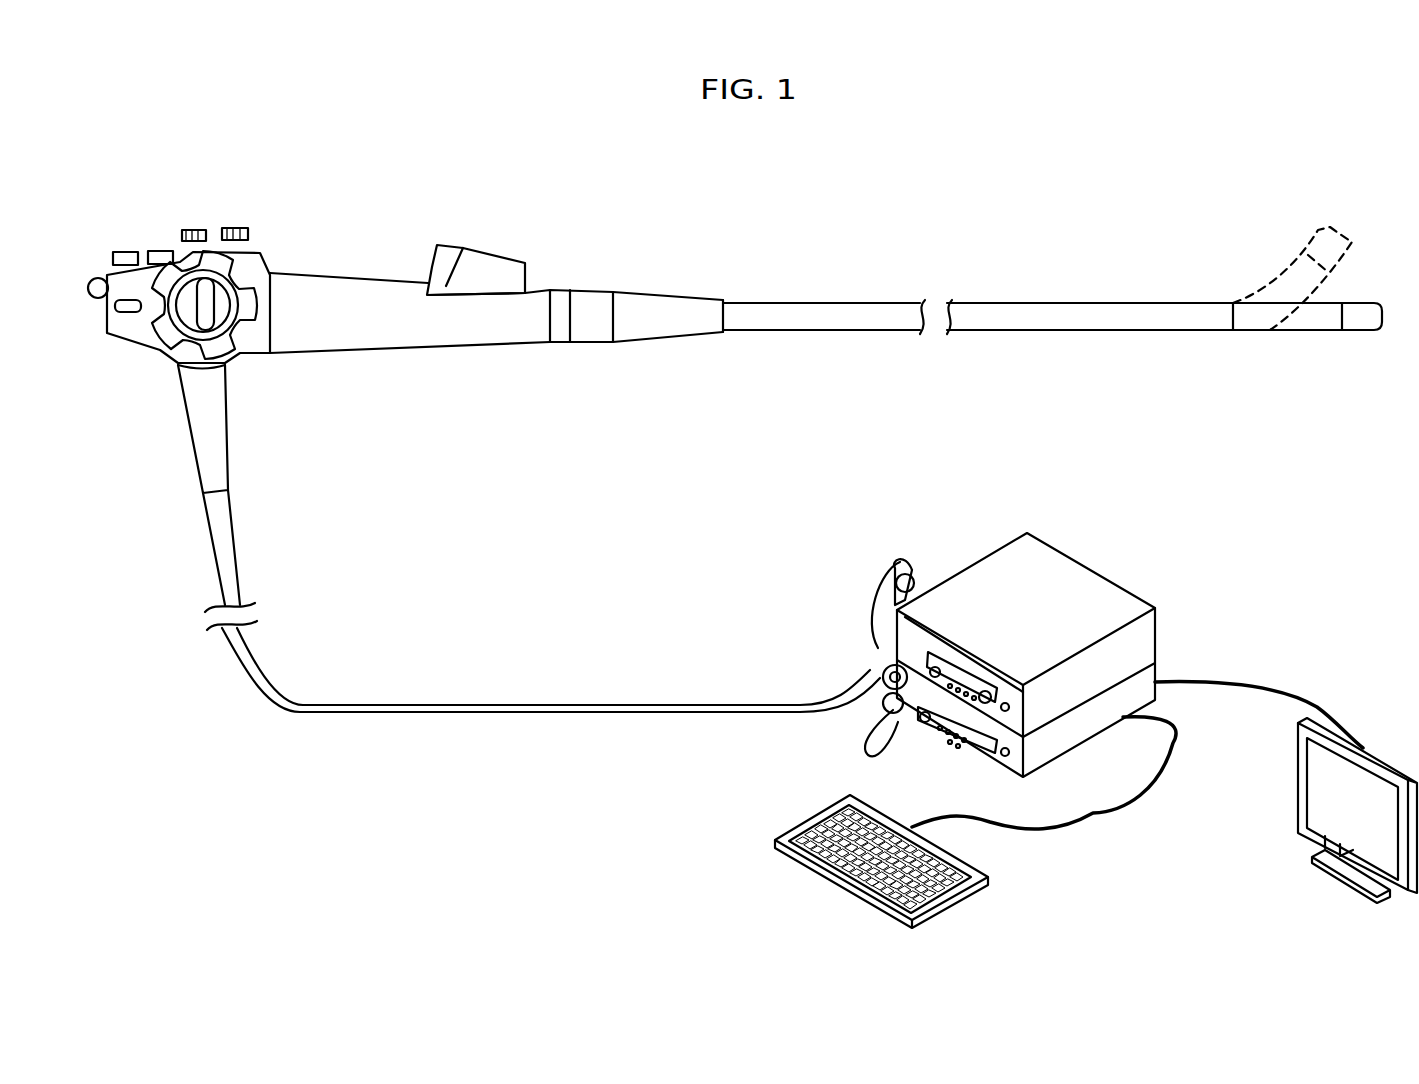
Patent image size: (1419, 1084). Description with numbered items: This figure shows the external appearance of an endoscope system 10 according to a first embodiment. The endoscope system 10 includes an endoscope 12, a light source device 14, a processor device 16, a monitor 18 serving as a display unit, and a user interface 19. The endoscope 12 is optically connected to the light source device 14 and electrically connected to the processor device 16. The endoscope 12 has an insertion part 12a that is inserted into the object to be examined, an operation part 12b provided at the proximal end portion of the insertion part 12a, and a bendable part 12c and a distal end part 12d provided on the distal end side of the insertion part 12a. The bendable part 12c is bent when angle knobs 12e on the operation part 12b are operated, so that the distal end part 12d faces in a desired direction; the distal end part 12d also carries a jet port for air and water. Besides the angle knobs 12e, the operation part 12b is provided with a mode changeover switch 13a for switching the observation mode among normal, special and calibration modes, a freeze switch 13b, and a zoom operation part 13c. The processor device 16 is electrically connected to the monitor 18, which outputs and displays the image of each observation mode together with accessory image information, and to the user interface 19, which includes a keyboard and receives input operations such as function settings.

The endoscope system 10 is at (583, 784).
The endoscope 12 is at (646, 254).
The insertion part 12a is at (892, 290).
The operation part 12b is at (403, 345).
The bendable part 12c is at (1282, 333).
The distal end part 12d is at (1360, 333).
The angle knobs 12e is at (200, 262).
The mode changeover switch 13a is at (158, 256).
The freeze switch 13b is at (127, 262).
The zoom operation part 13c is at (93, 281).
The light source device 14 is at (1072, 582).
The processor device 16 is at (1070, 738).
The monitor 18 is at (1353, 868).
The user interface 19 is at (833, 877).